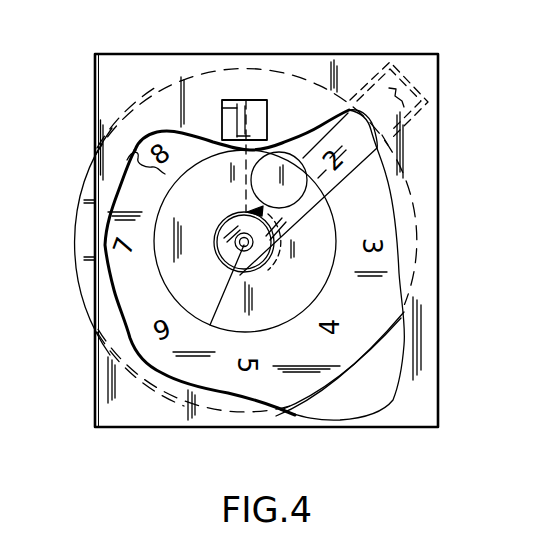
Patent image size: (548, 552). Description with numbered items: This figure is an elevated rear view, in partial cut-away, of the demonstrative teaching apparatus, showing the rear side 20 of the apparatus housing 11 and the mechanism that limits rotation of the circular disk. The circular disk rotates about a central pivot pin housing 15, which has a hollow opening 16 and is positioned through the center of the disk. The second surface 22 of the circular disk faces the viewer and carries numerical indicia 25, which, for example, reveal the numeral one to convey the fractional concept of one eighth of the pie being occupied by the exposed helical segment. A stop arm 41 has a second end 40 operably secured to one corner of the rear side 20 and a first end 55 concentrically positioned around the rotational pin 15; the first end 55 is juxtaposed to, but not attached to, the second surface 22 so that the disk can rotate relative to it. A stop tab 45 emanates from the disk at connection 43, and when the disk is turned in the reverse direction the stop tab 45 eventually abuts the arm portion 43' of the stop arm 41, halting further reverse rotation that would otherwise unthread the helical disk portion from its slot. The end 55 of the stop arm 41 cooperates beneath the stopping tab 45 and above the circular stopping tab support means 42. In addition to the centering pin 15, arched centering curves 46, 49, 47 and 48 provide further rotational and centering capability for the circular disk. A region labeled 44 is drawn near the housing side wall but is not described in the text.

The apparatus housing 11 is at (257, 53).
The pivot pin housing 15 is at (249, 247).
The hollow opening 16 is at (218, 295).
The rear side 20 is at (128, 107).
The second surface 22 is at (78, 268).
The numerical indicia 25 is at (222, 122).
The second end 40 is at (398, 97).
The stop arm 41 is at (355, 166).
The circular stopping tab support means 42 is at (175, 278).
The connection 43 is at (295, 110).
The arm portion 43' is at (312, 247).
The side wall 44 is at (132, 170).
The stop tab 45 is at (318, 195).
The arched centering curve 46 is at (152, 79).
The arched centering curve 47 is at (135, 409).
The arched centering curve 48 is at (383, 378).
The arched centering curve 49 is at (347, 70).
The first end 55 is at (227, 257).